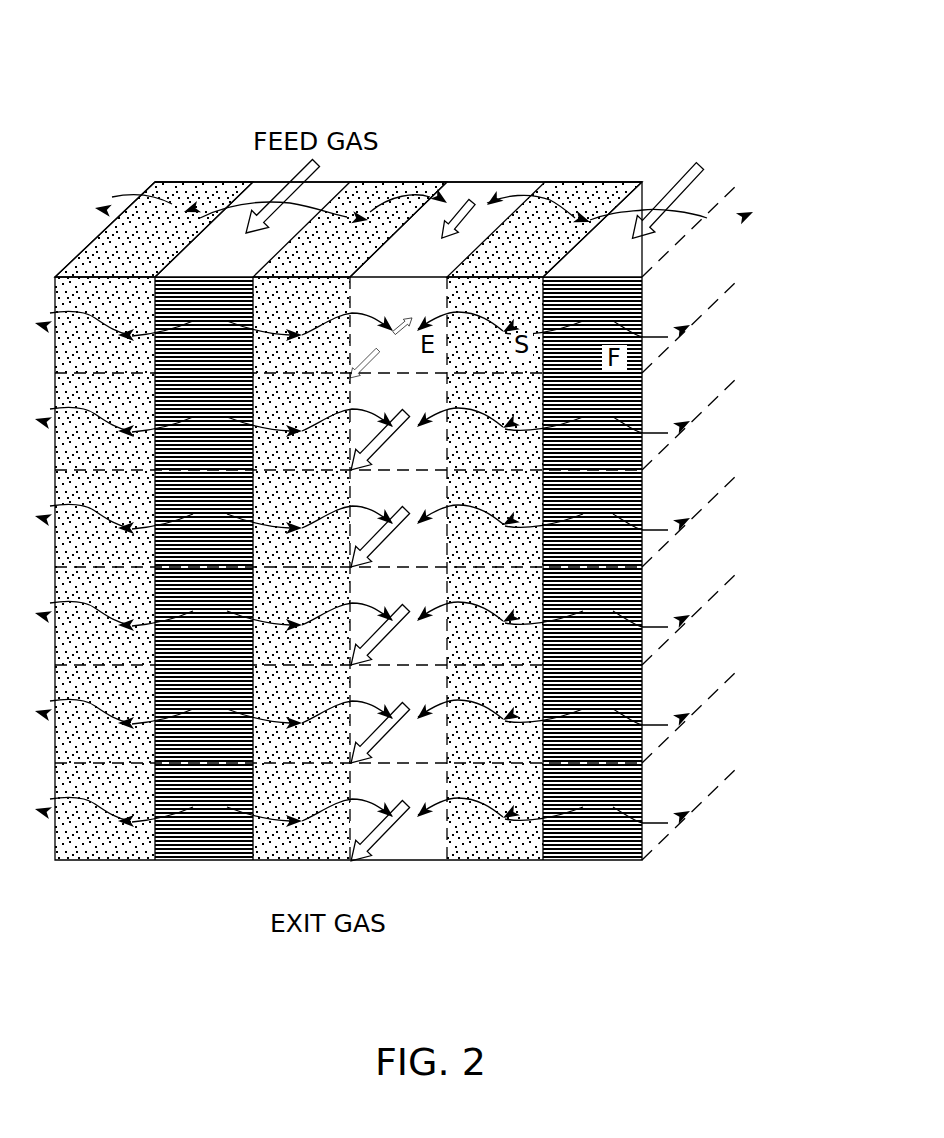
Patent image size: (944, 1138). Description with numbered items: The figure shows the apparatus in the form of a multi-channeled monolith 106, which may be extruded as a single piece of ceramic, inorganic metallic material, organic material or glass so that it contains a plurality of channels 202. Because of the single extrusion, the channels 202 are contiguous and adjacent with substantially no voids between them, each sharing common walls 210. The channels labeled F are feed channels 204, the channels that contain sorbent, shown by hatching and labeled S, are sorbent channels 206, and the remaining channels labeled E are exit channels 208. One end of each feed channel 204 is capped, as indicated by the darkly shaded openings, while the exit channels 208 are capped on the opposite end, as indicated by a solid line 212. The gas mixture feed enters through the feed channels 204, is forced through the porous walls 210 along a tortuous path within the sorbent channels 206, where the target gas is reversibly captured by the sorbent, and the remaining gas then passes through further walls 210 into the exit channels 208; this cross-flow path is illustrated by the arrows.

The multi-channeled monolith 106 is at (820, 27).
The channels 202 is at (227, 315).
The feed channels 204 is at (720, 255).
The sorbent channels 206 is at (492, 360).
The exit channels 208 is at (407, 357).
The walls 210 is at (220, 197).
The solid line 212 is at (477, 180).